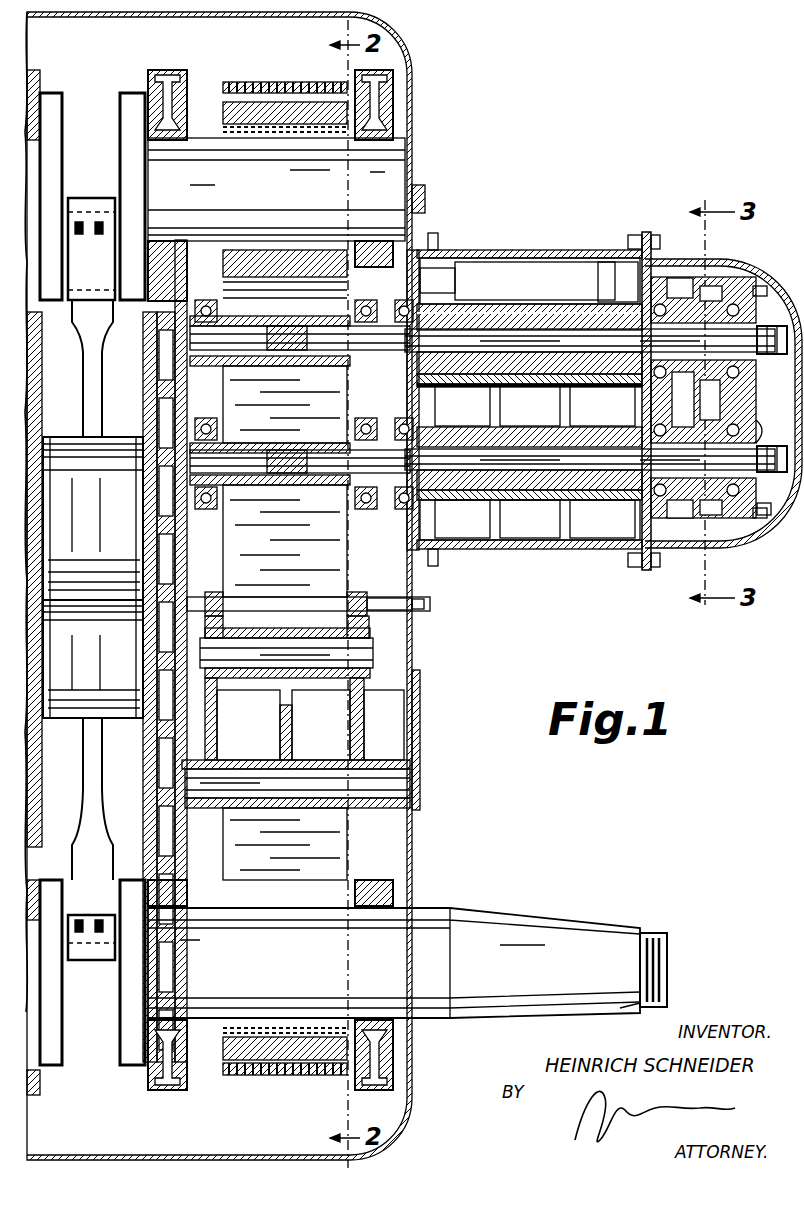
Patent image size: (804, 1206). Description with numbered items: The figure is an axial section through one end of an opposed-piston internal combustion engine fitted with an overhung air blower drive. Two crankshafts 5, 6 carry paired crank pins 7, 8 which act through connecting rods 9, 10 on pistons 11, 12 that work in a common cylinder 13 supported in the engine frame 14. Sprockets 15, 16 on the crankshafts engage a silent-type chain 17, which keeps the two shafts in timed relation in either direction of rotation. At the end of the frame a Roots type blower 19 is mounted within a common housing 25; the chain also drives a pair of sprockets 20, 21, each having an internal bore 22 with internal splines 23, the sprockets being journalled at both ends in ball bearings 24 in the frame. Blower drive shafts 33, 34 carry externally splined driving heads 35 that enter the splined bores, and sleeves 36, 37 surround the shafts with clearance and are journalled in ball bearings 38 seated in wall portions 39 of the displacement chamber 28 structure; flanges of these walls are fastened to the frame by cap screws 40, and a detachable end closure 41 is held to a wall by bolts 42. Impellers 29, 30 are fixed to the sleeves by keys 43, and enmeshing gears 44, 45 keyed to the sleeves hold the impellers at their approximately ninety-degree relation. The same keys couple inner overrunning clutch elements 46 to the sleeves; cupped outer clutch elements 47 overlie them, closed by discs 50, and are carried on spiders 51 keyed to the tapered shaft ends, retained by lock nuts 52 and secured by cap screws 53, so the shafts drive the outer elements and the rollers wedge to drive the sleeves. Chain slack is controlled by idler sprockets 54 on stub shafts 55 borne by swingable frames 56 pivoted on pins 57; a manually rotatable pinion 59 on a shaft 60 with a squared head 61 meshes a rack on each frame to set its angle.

The crankshaft 5 is at (400, 955).
The crankshaft 6 is at (315, 172).
The crank pin 7 is at (92, 948).
The crank pin 8 is at (90, 210).
The connecting rod 9 is at (100, 780).
The connecting rod 10 is at (95, 357).
The piston 11 is at (93, 659).
The piston 12 is at (93, 518).
The cylinder 13 is at (42, 400).
The engine frame 14 is at (425, 198).
The sprocket 15 is at (262, 1062).
The sprocket 16 is at (300, 105).
The chain 17 is at (268, 82).
The blower 19 is at (585, 245).
The sprocket 20 is at (288, 326).
The sprocket 21 is at (312, 485).
The internal bore 22 is at (175, 385).
The internal splines 23 is at (268, 338).
The ball bearings 24 is at (208, 298).
The housing 25 is at (550, 252).
The displacement chamber 28 is at (515, 275).
The impeller 29 is at (485, 312).
The impeller 30 is at (535, 545).
The blower drive shaft 33 is at (528, 340).
The blower drive shaft 34 is at (525, 460).
The splined driving head 35 is at (285, 450).
The sleeve 36 is at (588, 360).
The sleeve 37 is at (590, 440).
The ball bearings 38 is at (430, 405).
The web or wall portion 39 is at (620, 270).
The cap screws 40 is at (436, 240).
The end closure element 41 is at (755, 538).
The bolts 42 is at (652, 240).
The key 43 is at (460, 500).
The gear 44 is at (690, 282).
The gear 45 is at (660, 560).
The inner overrunning clutch element 46 is at (700, 272).
The outer clutch element 47 is at (750, 270).
The closure disc 50 is at (690, 292).
The spider 51 is at (770, 445).
The lock nut 52 is at (775, 447).
The cap screws 53 is at (750, 298).
The idler sprocket 54 is at (265, 683).
The stub shaft 55 is at (373, 652).
The swingable frame 56 is at (364, 725).
The pin 57 is at (232, 780).
The pinion 59 is at (238, 592).
The shaft 60 is at (388, 597).
The squared head 61 is at (420, 607).